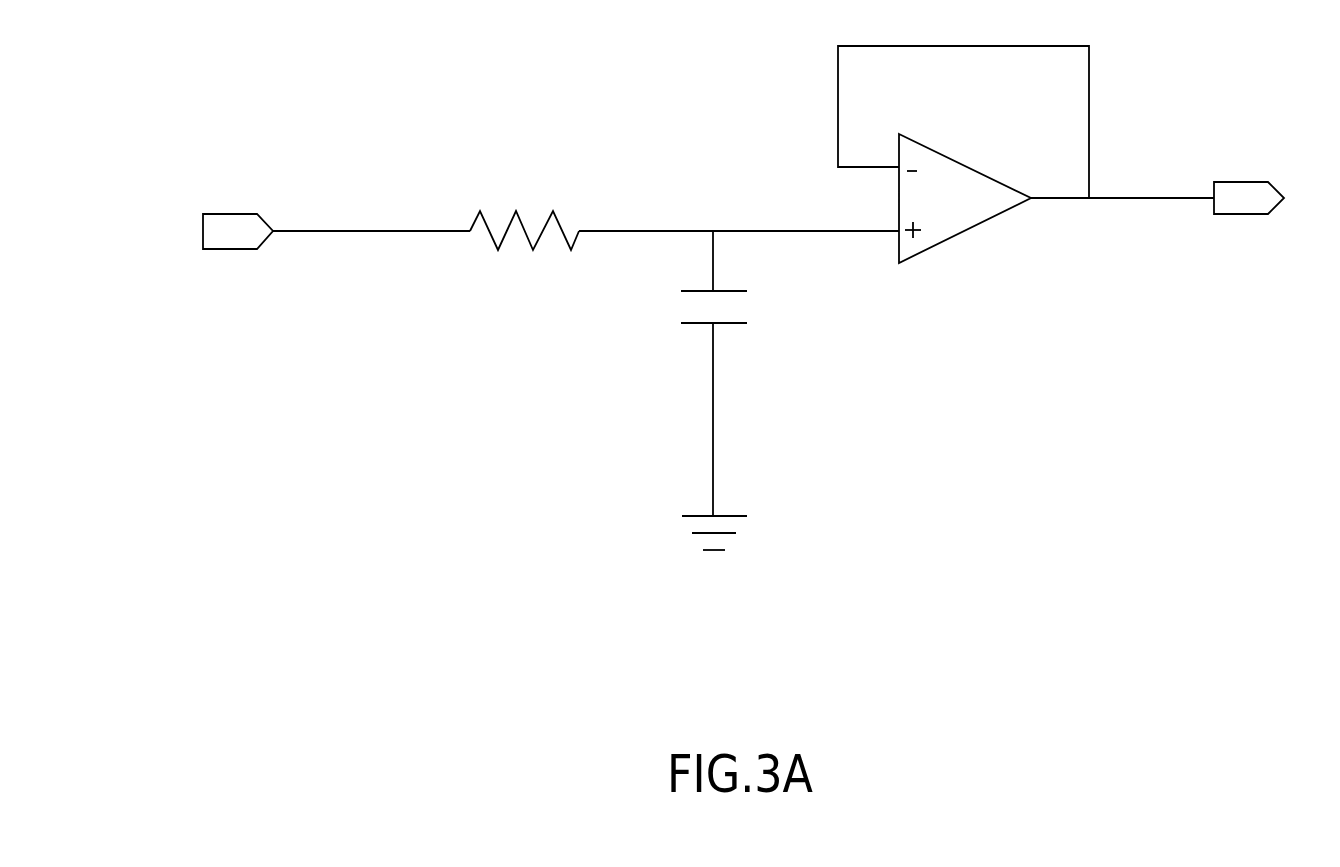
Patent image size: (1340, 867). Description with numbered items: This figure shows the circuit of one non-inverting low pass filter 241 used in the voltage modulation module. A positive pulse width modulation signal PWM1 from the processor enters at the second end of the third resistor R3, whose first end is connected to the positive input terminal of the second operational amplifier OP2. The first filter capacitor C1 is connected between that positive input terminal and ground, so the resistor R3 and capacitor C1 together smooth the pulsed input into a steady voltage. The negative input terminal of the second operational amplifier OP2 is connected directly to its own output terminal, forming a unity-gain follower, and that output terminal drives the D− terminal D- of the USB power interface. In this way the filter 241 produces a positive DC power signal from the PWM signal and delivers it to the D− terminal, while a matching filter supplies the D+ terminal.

The non-inverting low pass filter 241 is at (1026, 229).
The second operational amplifier OP2 is at (965, 198).
The third resistor R3 is at (524, 203).
The first filter capacitor C1 is at (740, 373).
The positive pulse width modulation signal PWM1 is at (190, 232).
The D− terminal D- is at (1271, 198).